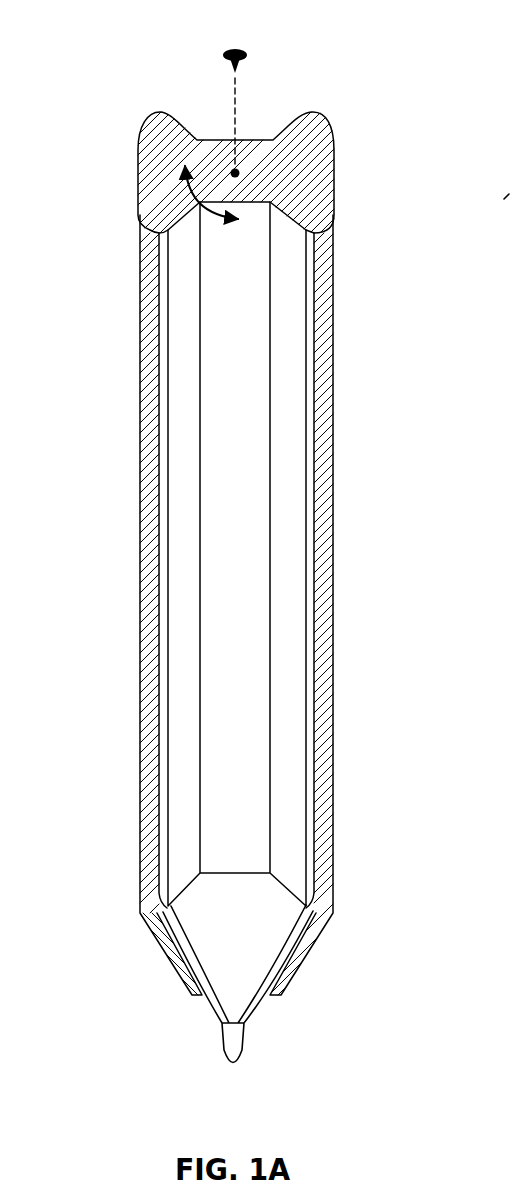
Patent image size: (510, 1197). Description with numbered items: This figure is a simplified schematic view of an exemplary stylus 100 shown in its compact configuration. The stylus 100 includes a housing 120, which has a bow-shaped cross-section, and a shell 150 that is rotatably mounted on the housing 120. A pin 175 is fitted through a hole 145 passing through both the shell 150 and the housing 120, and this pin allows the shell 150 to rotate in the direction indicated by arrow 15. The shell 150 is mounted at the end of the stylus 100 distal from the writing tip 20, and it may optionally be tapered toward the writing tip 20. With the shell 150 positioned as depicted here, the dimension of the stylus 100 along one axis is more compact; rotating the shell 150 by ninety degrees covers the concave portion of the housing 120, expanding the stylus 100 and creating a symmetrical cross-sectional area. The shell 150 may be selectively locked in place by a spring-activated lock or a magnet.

The stylus 100 is at (104, 248).
The shell 150 is at (300, 173).
The arrow 15 is at (178, 166).
The hole 145 is at (240, 170).
The pin 175 is at (238, 68).
The housing 120 is at (245, 392).
The writing tip 20 is at (243, 1047).